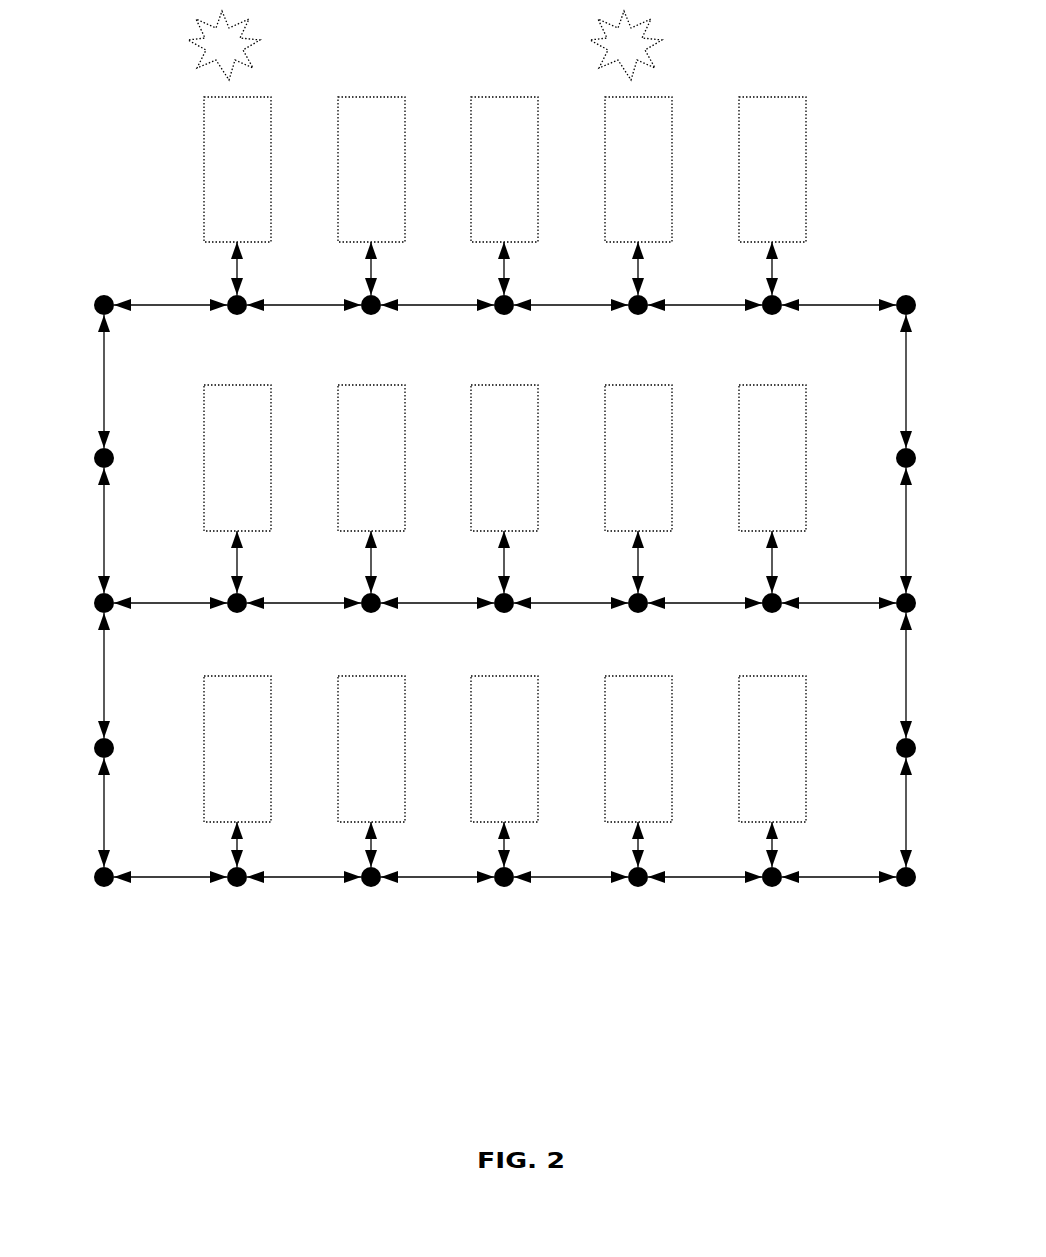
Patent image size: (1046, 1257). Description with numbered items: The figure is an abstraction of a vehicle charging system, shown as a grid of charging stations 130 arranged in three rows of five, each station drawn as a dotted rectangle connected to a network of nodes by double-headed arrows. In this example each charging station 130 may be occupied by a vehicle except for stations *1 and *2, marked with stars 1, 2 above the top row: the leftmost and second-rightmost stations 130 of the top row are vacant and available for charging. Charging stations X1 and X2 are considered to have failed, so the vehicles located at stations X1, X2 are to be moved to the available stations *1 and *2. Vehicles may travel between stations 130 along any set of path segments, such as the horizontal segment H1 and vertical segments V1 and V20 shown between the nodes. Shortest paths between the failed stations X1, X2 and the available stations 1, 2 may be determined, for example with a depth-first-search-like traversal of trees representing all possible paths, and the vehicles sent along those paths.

The charging station 130 is at (523, 180).
The failed charging station X1 is at (237, 749).
The failed charging station X2 is at (638, 458).
The vacant charging station 1 is at (229, 45).
The vacant charging station 2 is at (640, 45).
The path segment H1 is at (170, 916).
The path segment V1 is at (78, 812).
The vertical link V20 is at (665, 562).